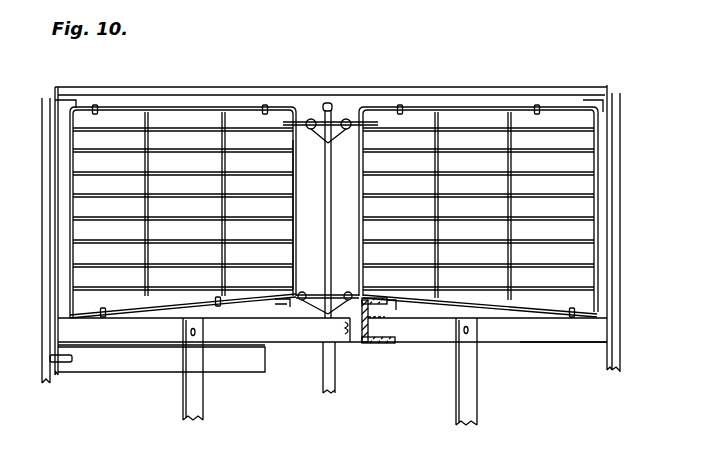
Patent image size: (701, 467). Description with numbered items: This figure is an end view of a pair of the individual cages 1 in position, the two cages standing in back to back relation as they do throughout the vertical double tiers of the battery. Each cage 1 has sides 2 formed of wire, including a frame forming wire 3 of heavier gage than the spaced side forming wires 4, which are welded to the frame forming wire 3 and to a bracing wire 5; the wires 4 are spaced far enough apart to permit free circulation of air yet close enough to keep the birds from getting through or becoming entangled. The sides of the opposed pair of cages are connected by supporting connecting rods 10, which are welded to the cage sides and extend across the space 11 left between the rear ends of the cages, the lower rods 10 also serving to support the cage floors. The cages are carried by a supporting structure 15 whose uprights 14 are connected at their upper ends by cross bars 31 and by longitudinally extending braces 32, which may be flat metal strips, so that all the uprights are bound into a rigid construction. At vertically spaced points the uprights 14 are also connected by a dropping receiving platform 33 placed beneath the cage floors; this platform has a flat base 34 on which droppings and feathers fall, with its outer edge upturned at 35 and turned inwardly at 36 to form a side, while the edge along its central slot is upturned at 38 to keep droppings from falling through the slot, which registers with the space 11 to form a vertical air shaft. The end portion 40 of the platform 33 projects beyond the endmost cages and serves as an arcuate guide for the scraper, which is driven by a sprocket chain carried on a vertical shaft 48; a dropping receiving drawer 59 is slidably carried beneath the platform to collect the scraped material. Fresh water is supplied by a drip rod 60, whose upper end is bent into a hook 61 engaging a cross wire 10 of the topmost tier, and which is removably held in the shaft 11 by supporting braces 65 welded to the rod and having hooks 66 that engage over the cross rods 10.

The individual cage 1 is at (82, 178).
The side 2 is at (197, 110).
The frame forming wire 3 is at (298, 216).
The side forming wire 4 is at (244, 262).
The bracing wire 5 is at (210, 229).
The supporting connecting rod 10 is at (153, 125).
The space 11 is at (342, 110).
The upright 14 is at (50, 150).
The supporting structure 15 is at (43, 228).
The cross bar 31 is at (245, 92).
The longitudinally extending brace 32 is at (66, 100).
The dropping receiving platform 33 is at (309, 344).
The flat base 34 is at (383, 343).
The upturned outer edge 35 is at (75, 330).
The inturned edge portion 36 is at (287, 305).
The upturned slot edge 38 is at (364, 343).
The end portion 40 is at (552, 337).
The vertical shaft 48 is at (336, 388).
The dropping receiving drawer 59 is at (117, 362).
The drip rod 60 is at (331, 197).
The hook 61 is at (330, 104).
The supporting brace 65 is at (351, 124).
The hook 66 is at (318, 121).